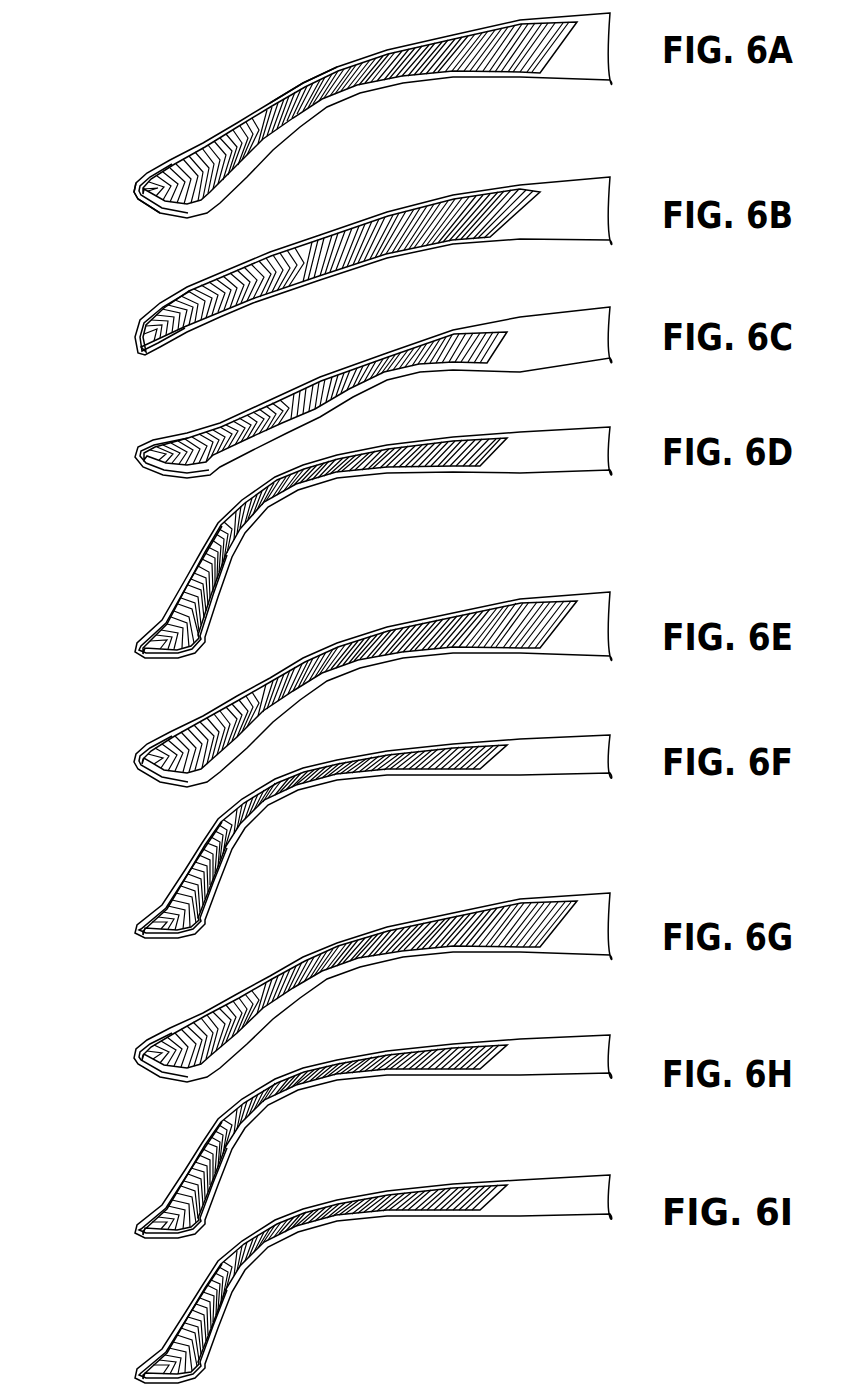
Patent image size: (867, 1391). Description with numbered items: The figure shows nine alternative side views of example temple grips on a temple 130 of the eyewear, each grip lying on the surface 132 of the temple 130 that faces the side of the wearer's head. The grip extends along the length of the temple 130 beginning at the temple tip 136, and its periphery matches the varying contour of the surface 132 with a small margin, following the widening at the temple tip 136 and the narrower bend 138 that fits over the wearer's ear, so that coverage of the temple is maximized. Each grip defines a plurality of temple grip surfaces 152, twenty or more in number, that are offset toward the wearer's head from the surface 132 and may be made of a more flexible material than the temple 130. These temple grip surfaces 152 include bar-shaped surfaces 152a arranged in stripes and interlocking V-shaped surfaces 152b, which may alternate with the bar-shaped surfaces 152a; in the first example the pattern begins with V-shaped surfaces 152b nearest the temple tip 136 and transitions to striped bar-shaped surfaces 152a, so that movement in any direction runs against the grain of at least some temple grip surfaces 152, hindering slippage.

The temple 130 is at (522, 80).
The surface 132 is at (222, 199).
The temple tip 136 is at (128, 183).
The bend 138 is at (315, 61).
The temple grip surfaces 152 is at (404, 113).
The bar-shaped surfaces 152a is at (310, 100).
The V-shaped surfaces 152b is at (263, 147).